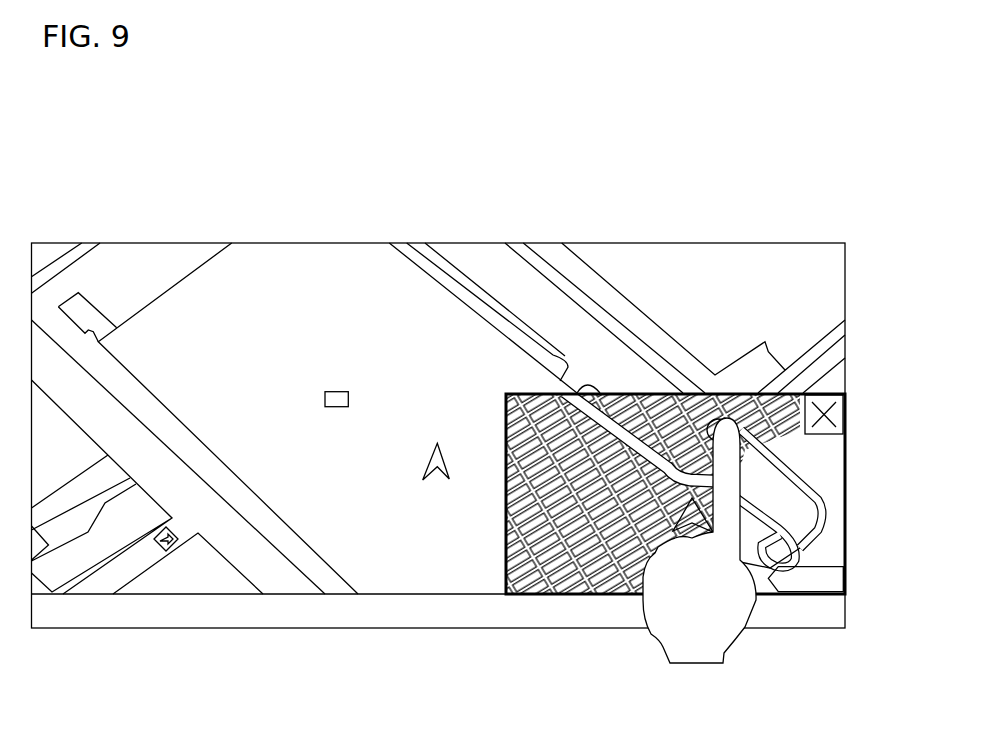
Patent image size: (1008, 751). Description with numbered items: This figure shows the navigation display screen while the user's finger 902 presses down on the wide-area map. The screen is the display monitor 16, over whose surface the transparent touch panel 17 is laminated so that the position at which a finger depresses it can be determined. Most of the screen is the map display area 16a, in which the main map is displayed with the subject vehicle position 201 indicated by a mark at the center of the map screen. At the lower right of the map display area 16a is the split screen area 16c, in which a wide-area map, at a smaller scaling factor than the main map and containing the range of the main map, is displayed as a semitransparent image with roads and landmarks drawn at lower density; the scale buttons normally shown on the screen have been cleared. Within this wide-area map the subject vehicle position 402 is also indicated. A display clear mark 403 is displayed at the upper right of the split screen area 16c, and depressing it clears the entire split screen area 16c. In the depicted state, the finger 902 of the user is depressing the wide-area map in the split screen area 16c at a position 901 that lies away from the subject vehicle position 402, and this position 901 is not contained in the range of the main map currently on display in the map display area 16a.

The display monitor 16 is at (743, 224).
The touch panel 17 is at (439, 393).
The map display area 16a is at (601, 260).
The subject vehicle position 201 is at (437, 443).
The split screen area 16c is at (778, 485).
The display clear mark 403 is at (843, 413).
The position 901 is at (731, 428).
The subject vehicle position 402 is at (645, 553).
The finger 902 is at (698, 648).